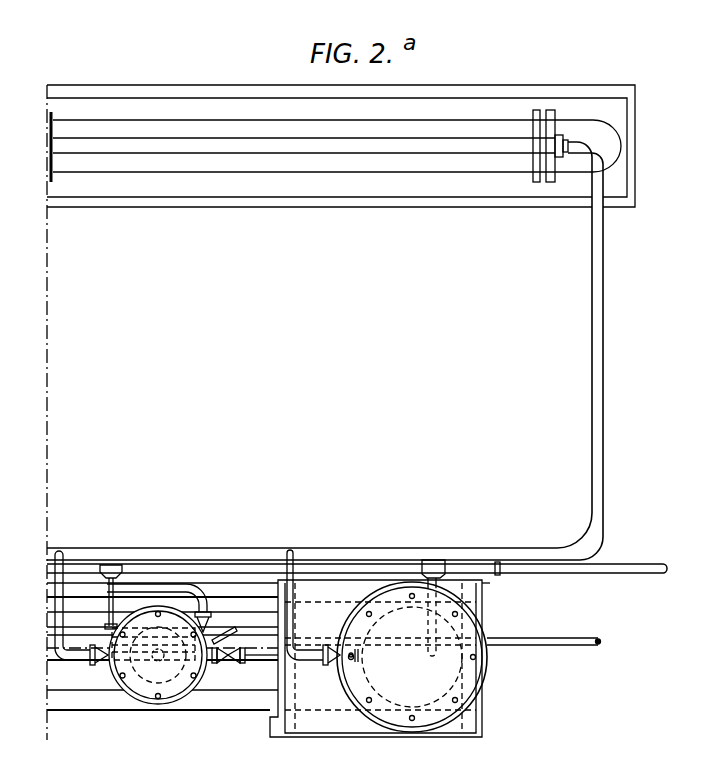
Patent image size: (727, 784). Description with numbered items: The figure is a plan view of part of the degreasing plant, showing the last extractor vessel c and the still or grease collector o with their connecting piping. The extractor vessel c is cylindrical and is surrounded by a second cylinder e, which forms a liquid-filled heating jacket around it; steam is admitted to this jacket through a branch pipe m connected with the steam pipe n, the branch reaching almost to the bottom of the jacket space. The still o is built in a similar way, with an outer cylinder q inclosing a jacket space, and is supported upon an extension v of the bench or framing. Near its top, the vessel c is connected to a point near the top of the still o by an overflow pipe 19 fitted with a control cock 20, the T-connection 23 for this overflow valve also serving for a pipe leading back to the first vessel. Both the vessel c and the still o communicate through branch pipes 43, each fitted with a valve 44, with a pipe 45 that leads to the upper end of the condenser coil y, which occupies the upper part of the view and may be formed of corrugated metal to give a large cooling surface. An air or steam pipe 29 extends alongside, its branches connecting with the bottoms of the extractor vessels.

The condenser coil y is at (122, 172).
The pipe 45 is at (135, 548).
The branch pipe 43 is at (63, 600).
The valve 44 is at (106, 661).
The branch pipe m is at (117, 597).
The steam pipe n is at (238, 573).
The second cylinder e is at (141, 705).
The extractor vessel c is at (180, 685).
The T-connection 23 is at (230, 664).
The control cock 20 is at (245, 661).
The overflow pipe 19 is at (273, 660).
The extension v is at (351, 734).
The outer cylinder q is at (352, 690).
The still o is at (459, 675).
The air or steam pipe 29 is at (515, 643).